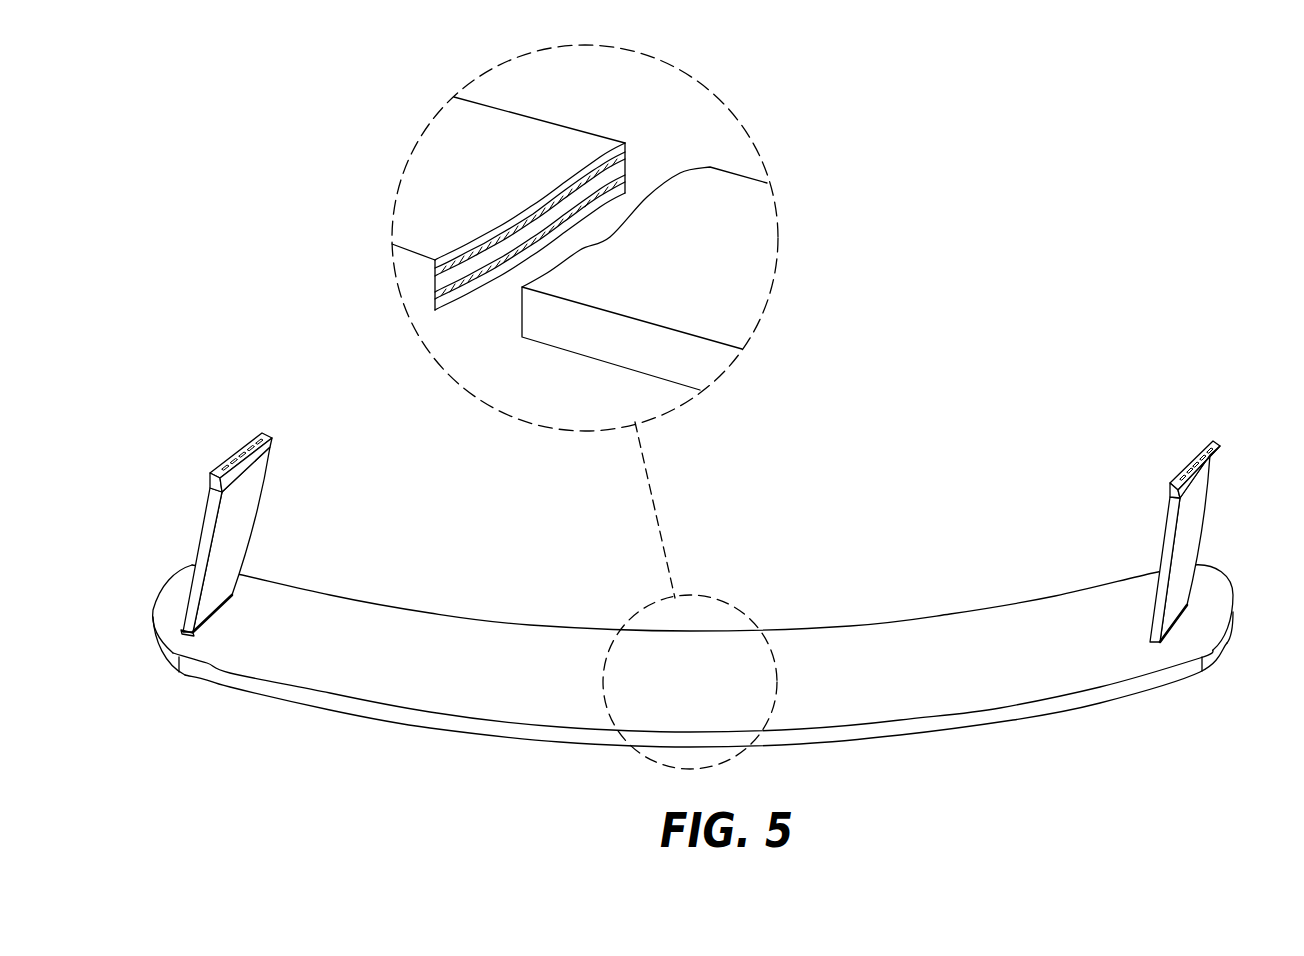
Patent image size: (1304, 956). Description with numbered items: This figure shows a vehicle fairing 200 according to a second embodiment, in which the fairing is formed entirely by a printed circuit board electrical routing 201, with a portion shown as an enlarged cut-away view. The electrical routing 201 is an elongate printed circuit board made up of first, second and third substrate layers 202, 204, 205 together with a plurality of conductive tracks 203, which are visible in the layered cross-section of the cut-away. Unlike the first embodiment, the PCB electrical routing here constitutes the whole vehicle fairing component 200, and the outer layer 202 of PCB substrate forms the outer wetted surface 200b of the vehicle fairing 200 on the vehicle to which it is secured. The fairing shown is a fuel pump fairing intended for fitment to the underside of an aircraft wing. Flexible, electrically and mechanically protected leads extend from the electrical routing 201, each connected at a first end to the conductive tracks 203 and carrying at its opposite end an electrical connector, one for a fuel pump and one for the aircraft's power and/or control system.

The vehicle fairing 200 is at (723, 526).
The outer wetted surface 200b is at (893, 737).
The electrical routing 201 is at (589, 121).
The first substrate layer 202 is at (453, 307).
The conductive tracks 203 is at (565, 212).
The second substrate layer 204 is at (445, 287).
The third substrate layer 205 is at (455, 260).